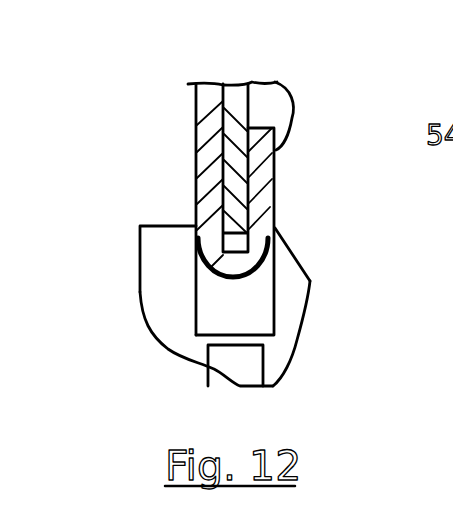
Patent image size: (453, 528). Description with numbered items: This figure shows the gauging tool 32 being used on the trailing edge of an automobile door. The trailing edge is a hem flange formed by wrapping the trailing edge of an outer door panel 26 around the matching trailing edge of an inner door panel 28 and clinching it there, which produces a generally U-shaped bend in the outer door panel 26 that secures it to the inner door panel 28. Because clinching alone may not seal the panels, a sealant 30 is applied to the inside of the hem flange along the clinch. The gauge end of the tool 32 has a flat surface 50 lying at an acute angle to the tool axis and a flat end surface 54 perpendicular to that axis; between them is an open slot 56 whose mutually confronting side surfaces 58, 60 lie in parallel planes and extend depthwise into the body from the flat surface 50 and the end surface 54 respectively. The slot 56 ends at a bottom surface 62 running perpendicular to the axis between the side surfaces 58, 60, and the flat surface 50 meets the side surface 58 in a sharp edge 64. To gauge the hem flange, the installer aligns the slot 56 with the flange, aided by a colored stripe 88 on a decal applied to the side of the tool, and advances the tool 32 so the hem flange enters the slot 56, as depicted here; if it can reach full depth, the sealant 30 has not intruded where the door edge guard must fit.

The outer door panel 26 is at (197, 83).
The inner door panel 28 is at (235, 98).
The sealant 30 is at (282, 85).
The tool 32 is at (156, 329).
The flat surface 50 is at (293, 258).
The flat end surface 54 is at (163, 224).
The open slot 56 is at (247, 290).
The side surface 58 is at (266, 292).
The side surface 60 is at (196, 289).
The bottom surface 62 is at (234, 333).
The sharp edge 64 is at (275, 228).
The colored stripe 88 is at (237, 363).